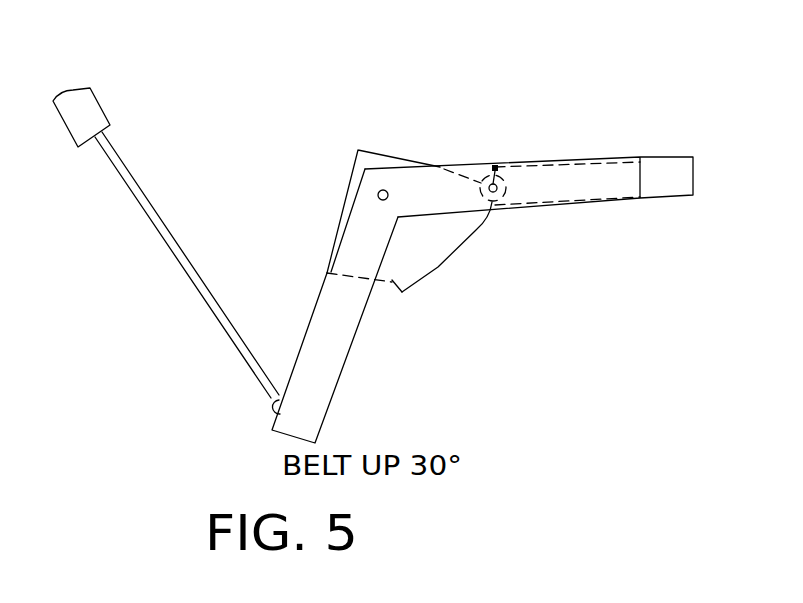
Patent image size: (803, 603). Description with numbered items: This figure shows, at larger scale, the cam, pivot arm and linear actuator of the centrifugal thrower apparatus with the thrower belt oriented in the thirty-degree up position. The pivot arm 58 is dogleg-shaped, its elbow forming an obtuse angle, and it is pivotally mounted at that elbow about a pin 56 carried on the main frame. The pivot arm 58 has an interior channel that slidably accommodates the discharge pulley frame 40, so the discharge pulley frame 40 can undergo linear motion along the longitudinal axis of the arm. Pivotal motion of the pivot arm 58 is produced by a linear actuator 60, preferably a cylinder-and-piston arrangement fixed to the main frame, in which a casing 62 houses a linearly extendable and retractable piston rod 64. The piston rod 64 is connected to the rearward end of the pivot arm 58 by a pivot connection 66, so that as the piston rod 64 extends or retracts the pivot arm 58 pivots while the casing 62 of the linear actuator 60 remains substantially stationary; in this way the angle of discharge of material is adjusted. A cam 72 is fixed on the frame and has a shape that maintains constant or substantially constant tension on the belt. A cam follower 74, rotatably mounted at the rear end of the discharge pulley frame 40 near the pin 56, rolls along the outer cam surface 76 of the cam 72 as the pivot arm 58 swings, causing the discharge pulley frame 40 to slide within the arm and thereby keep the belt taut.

The discharge pulley frame 40 is at (680, 170).
The pin 56 is at (385, 190).
The pivot arm 58 is at (345, 342).
The linear actuator 60 is at (127, 130).
The casing 62 is at (90, 107).
The piston rod 64 is at (213, 313).
The pivot connection 66 is at (268, 411).
The cam 72 is at (380, 288).
The cam follower 74 is at (497, 165).
The outer cam surface 76 is at (438, 267).